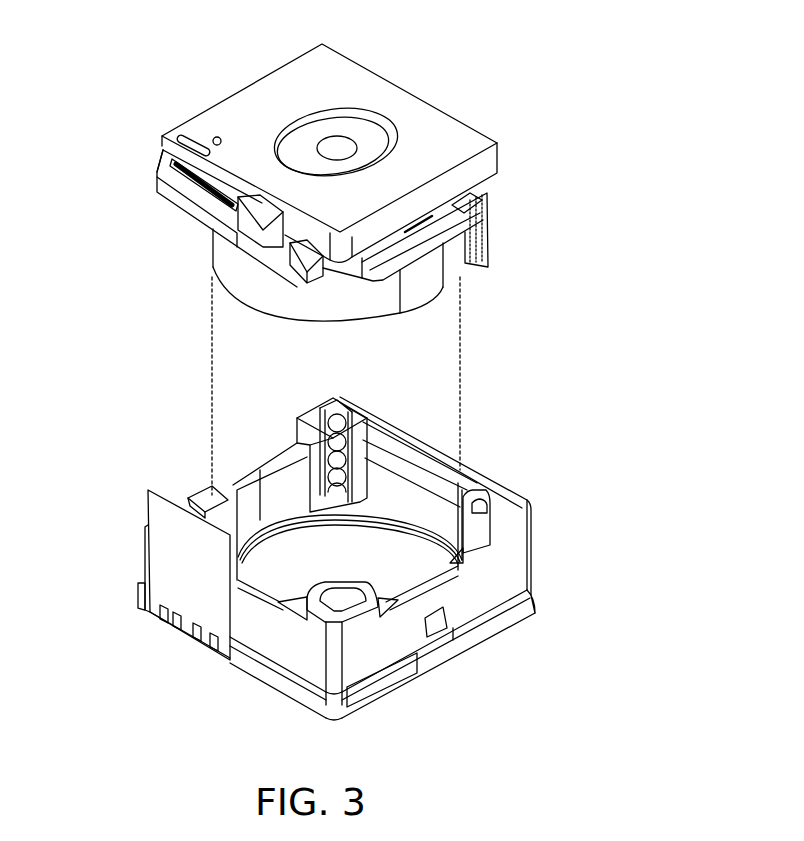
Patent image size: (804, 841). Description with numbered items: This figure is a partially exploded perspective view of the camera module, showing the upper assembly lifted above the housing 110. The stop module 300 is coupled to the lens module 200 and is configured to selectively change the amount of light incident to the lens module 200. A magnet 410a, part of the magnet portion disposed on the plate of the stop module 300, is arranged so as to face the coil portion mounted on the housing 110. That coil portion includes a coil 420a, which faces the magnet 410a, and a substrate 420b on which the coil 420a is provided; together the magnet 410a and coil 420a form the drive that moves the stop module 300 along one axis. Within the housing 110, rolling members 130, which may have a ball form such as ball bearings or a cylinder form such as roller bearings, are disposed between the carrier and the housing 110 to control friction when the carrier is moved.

The stop module 300 is at (412, 76).
The lens module 200 is at (499, 231).
The magnet 410a is at (178, 187).
The rolling members 130 is at (335, 397).
The housing 110 is at (507, 569).
The coil 420a is at (195, 500).
The substrate 420b is at (166, 566).